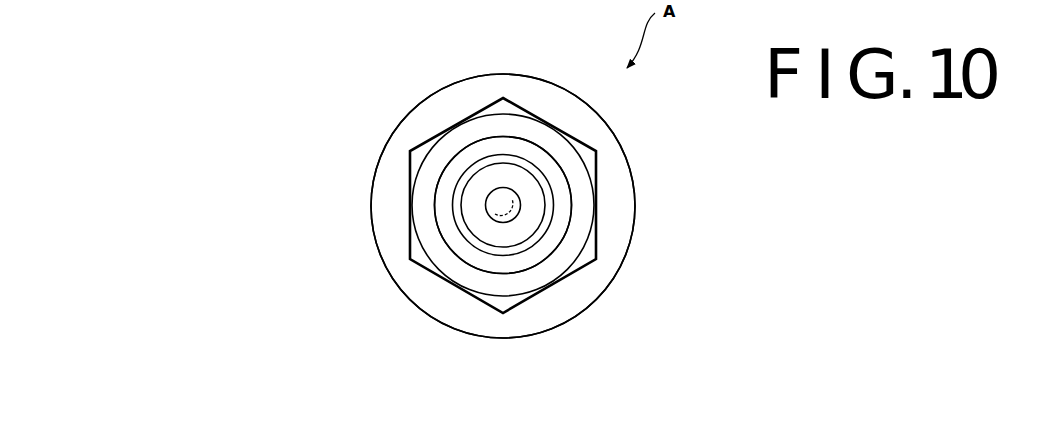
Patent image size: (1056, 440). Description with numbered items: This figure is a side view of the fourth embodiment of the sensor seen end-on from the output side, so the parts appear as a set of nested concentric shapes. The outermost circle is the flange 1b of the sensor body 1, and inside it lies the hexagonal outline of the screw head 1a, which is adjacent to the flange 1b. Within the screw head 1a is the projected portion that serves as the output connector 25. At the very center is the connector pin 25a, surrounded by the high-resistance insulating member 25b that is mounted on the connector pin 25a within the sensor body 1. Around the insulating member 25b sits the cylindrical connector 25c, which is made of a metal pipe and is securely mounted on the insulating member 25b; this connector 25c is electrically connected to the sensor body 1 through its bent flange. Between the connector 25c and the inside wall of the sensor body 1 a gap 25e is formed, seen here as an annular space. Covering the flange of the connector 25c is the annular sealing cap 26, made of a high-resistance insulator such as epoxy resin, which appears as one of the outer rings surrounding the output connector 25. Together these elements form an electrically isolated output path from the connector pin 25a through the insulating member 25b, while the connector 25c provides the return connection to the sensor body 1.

The sensor body 1 is at (403, 120).
The screw head 1a is at (412, 203).
The flange 1b is at (390, 168).
The output connector 25 is at (548, 228).
The connector pin 25a is at (515, 193).
The insulating member 25b is at (537, 205).
The cylindrical connector 25c is at (473, 168).
The gap 25e is at (453, 238).
The annular sealing cap 26 is at (530, 147).